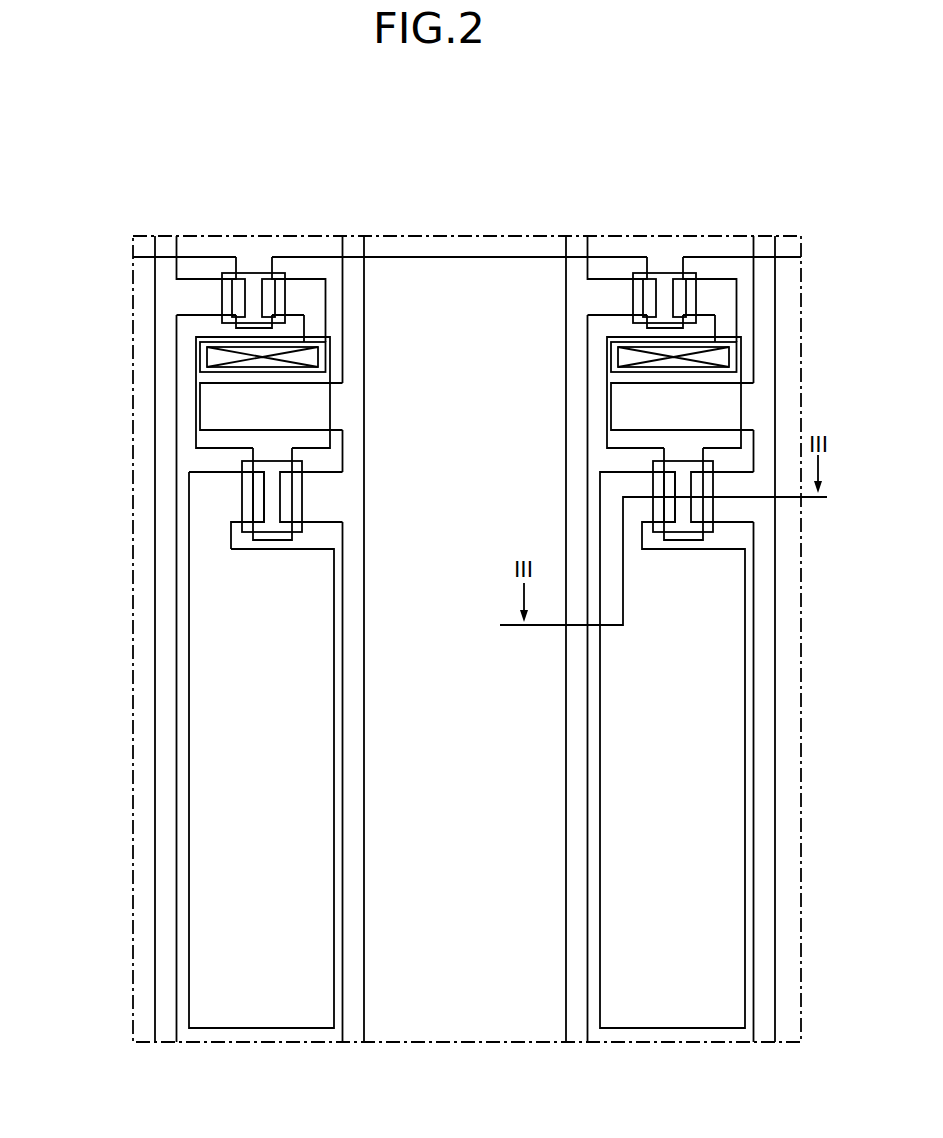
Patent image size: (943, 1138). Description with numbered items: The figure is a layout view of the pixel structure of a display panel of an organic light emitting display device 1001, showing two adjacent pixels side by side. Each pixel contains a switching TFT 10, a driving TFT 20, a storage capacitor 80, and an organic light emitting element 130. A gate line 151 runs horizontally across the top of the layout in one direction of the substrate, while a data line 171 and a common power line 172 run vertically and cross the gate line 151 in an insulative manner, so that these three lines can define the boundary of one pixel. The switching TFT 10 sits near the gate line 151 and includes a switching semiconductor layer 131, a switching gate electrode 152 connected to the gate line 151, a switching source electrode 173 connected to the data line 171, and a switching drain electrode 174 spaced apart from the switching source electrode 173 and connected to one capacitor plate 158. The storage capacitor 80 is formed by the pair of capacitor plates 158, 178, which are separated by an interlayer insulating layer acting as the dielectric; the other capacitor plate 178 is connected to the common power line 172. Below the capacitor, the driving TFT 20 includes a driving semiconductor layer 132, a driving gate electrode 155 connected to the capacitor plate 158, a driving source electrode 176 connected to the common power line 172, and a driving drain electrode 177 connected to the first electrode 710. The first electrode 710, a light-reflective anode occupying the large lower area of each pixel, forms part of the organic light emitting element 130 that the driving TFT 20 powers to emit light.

The organic light emitting display 1001 is at (457, 125).
The switching TFT 10 is at (252, 248).
The driving TFT 20 is at (190, 542).
The storage capacitor 80 is at (190, 398).
The organic light emitting element 130 is at (203, 750).
The switching semiconductor layer 131 is at (250, 287).
The driving semiconductor layer 132 is at (270, 533).
The gate line 151 is at (140, 245).
The switching gate electrode 152 is at (247, 278).
The driving gate electrode 155 is at (292, 538).
The capacitor plate 158 is at (197, 437).
The data line 171 is at (165, 352).
The common power line 172 is at (352, 285).
The switching source electrode 173 is at (199, 279).
The switching drain electrode 174 is at (182, 166).
The driving source electrode 176 is at (313, 524).
The driving drain electrode 177 is at (243, 524).
The capacitor plate 178 is at (213, 432).
The first electrode 710 is at (188, 724).